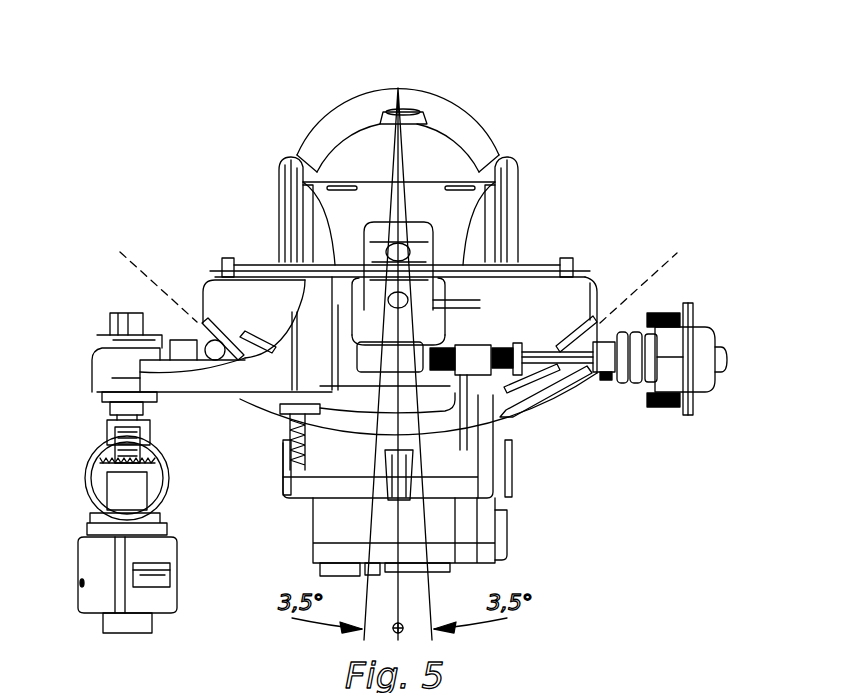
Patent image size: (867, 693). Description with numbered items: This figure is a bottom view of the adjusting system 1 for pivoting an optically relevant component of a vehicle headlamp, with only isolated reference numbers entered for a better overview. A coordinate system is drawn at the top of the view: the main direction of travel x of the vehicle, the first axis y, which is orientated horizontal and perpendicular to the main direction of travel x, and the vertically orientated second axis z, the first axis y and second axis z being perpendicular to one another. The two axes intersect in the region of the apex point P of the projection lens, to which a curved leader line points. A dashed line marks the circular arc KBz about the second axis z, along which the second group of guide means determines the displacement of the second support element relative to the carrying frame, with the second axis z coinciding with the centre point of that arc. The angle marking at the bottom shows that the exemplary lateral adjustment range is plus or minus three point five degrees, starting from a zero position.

The adjusting system 1 is at (165, 103).
The apex point P is at (400, 87).
The circular arc KBz is at (422, 277).
The main direction of travel x is at (398, 88).
The first axis y is at (398, 88).
The second axis z is at (388, 77).